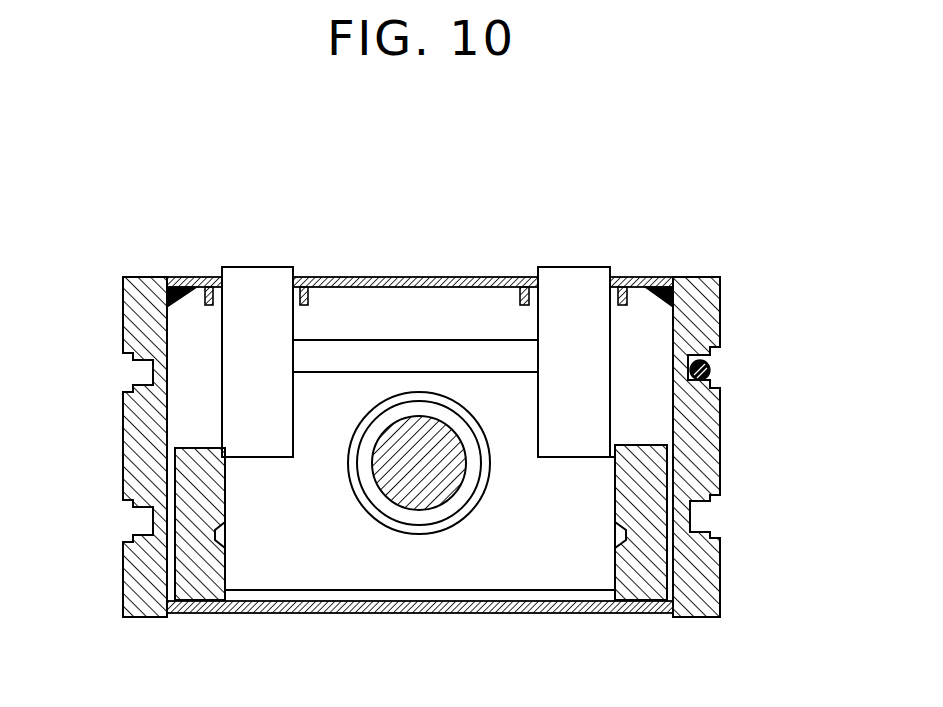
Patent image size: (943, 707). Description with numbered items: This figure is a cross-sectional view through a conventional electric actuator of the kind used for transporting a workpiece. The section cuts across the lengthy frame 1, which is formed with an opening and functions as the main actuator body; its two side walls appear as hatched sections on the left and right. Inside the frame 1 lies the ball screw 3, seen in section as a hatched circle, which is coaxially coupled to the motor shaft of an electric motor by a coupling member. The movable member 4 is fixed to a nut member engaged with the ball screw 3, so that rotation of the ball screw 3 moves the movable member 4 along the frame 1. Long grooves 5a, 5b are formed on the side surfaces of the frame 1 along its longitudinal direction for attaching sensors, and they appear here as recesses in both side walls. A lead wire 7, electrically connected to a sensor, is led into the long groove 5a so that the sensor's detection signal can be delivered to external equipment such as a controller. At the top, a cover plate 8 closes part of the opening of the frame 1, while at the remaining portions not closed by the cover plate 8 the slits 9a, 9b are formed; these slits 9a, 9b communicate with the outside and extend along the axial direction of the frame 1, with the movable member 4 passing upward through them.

The frame 1 is at (365, 618).
The ball screw 3 is at (440, 493).
The movable member 4 is at (618, 334).
The long groove 5a is at (150, 372).
The long groove 5b is at (150, 519).
The lead wire 7 is at (712, 378).
The cover plate 8 is at (402, 277).
The slit 9a is at (240, 280).
The slit 9b is at (605, 280).